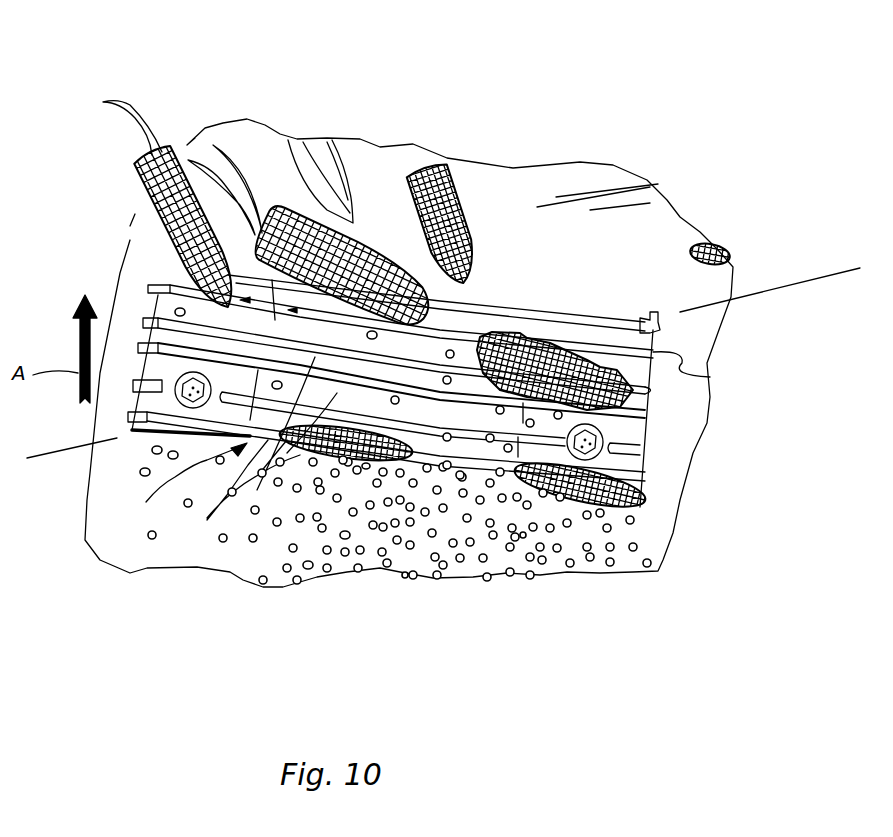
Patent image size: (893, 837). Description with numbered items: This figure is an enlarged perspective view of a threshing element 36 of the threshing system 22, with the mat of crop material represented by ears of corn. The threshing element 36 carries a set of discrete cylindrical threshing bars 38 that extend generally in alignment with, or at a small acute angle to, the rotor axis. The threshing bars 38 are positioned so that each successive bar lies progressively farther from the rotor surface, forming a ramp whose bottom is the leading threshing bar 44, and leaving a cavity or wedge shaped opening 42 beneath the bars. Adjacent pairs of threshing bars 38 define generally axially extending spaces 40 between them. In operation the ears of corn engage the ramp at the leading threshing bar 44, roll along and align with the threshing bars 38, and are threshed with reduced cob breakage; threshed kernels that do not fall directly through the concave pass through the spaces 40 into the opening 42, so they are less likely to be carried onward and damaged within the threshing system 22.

The threshing system 22 is at (542, 85).
The threshing element 36 is at (605, 263).
The threshing bars 38 is at (655, 388).
The spaces 40 is at (460, 322).
The cavity or wedge shaped opening 42 is at (175, 477).
The leading threshing bar 44 is at (663, 330).